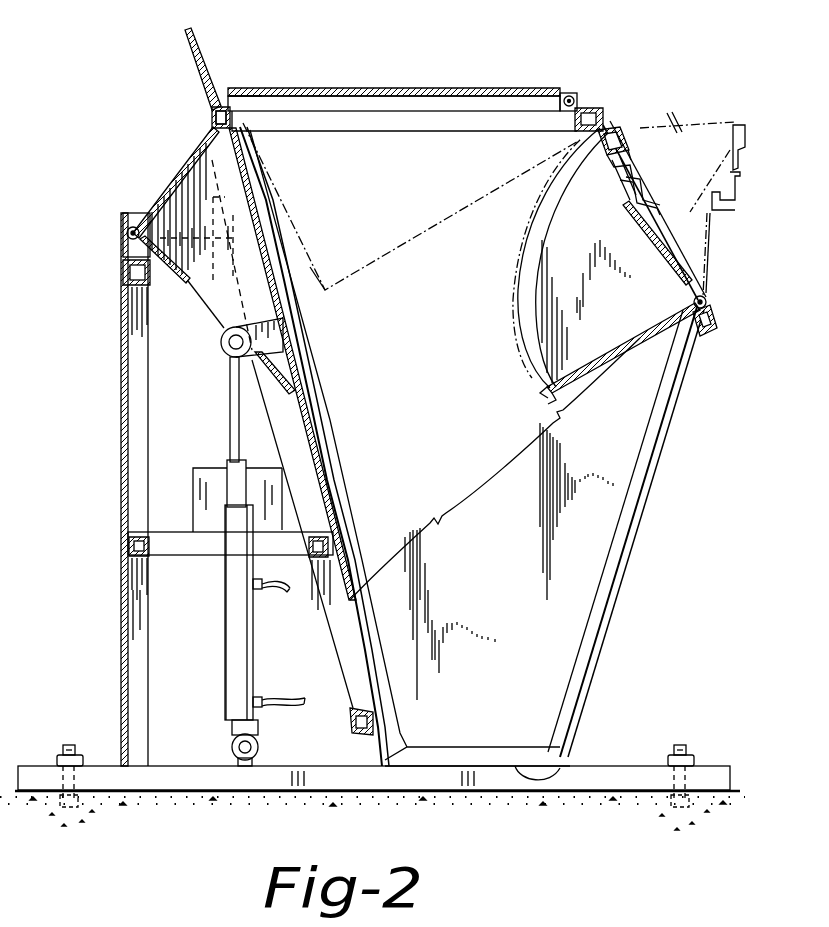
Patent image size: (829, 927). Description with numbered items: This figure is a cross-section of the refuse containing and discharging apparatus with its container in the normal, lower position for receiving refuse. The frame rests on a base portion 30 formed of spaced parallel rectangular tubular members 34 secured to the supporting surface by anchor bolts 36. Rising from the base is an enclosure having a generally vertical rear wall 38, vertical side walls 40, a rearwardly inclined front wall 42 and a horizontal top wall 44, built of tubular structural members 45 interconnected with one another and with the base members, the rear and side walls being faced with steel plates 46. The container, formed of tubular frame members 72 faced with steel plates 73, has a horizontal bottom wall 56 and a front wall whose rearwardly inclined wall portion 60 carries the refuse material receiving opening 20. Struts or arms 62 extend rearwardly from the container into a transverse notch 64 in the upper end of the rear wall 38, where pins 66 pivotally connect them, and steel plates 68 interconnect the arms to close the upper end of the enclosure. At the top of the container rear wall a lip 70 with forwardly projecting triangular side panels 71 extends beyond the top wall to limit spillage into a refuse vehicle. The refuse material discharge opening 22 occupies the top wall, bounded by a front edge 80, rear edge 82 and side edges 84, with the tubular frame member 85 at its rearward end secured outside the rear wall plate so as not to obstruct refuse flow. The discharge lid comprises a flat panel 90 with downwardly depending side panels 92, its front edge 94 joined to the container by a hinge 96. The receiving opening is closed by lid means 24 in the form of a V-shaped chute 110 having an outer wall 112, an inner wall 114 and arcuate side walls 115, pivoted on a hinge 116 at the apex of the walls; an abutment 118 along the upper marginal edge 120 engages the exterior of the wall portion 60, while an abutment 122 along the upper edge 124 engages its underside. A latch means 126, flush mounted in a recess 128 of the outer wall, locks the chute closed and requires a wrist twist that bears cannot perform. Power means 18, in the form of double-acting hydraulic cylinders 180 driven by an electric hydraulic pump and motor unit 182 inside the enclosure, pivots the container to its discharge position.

The power means 18 is at (226, 657).
The refuse material receiving opening 20 is at (640, 152).
The refuse material discharge opening 22 is at (465, 111).
The lid means 24 is at (660, 152).
The base portion 30 is at (527, 795).
The tubular members 34 is at (170, 792).
The anchor bolts 36 is at (64, 752).
The rear wall 38 is at (120, 397).
The side walls 40 is at (174, 411).
The front wall 42 is at (177, 553).
The top wall 44 is at (200, 166).
The tubular structural members 45 is at (134, 606).
The steel plates 46 is at (126, 535).
The bottom wall 56 is at (545, 780).
The wall portion 60 is at (615, 124).
The struts or arms 62 is at (200, 163).
The transverse notch 64 is at (130, 213).
The pins 66 is at (127, 236).
The steel plates 68 is at (166, 181).
The lip 70 is at (187, 47).
The triangular side panels 71 is at (222, 112).
The tubular frame members 72 is at (344, 670).
The steel plates 73 is at (482, 473).
The front edge 80 is at (583, 107).
The rear edge 82 is at (262, 97).
The side edges 84 is at (348, 113).
The tubular frame member 85 is at (219, 82).
The panel 90 is at (403, 90).
The side panels 92 is at (392, 255).
The front edge 94 is at (566, 92).
The hinge 96 is at (570, 96).
The V-shaped chute 110 is at (660, 256).
The outer wall 112 is at (704, 296).
The inner wall 114 is at (646, 336).
The arcuate side walls 115 is at (572, 232).
The hinge 116 is at (713, 312).
The abutment 118 is at (623, 150).
The upper marginal edge 120 is at (620, 133).
The abutment 122 is at (553, 393).
The upper edge 124 is at (545, 392).
The latch means 126 is at (641, 196).
The recess 128 is at (662, 214).
The hydraulic cylinders 180 is at (254, 640).
The electric hydraulic pump and electric motor unit 182 is at (193, 483).